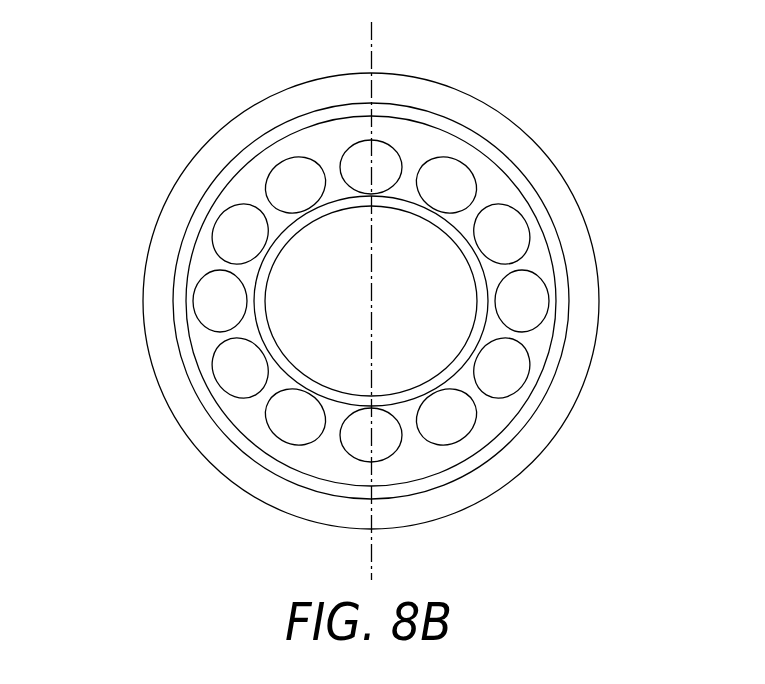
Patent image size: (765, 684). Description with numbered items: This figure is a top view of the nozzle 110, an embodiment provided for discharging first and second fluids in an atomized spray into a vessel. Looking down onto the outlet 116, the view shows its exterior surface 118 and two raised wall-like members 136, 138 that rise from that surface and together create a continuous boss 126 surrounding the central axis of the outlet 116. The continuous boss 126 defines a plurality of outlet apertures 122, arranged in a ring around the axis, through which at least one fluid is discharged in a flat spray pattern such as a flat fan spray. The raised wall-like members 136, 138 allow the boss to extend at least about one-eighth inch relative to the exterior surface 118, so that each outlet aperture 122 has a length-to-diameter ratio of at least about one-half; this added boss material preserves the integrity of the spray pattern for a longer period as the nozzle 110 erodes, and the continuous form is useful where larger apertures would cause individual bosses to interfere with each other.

The nozzle 110 is at (81, 194).
The outlet 116 is at (515, 463).
The exterior surface 118 is at (572, 368).
The raised wall-like member 136 is at (310, 110).
The continuous boss 126 is at (397, 279).
The outlet apertures 122 is at (374, 157).
The raised wall-like member 138 is at (293, 373).